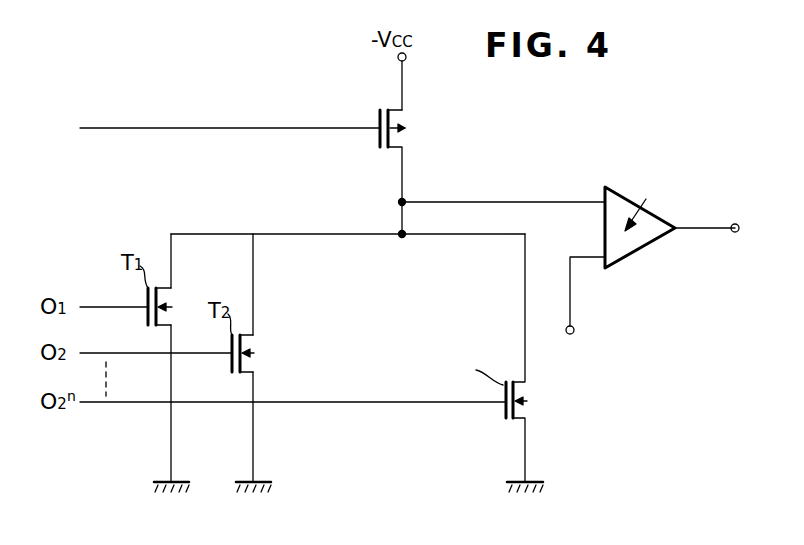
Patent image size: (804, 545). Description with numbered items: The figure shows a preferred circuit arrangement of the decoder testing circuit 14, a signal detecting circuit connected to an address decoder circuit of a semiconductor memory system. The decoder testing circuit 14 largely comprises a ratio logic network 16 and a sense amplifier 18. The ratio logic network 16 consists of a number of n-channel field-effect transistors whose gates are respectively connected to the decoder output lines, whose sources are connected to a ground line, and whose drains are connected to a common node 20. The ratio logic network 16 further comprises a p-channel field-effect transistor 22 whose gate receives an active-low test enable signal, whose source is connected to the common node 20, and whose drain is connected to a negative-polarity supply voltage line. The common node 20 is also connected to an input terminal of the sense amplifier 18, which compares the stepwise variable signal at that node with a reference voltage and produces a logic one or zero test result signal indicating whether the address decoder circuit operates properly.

The decoder testing circuit 14 is at (539, 390).
The ratio logic network 16 is at (488, 184).
The sense amplifier 18 is at (605, 228).
The common node 20 is at (403, 238).
The p-channel field-effect transistor 22 is at (379, 111).